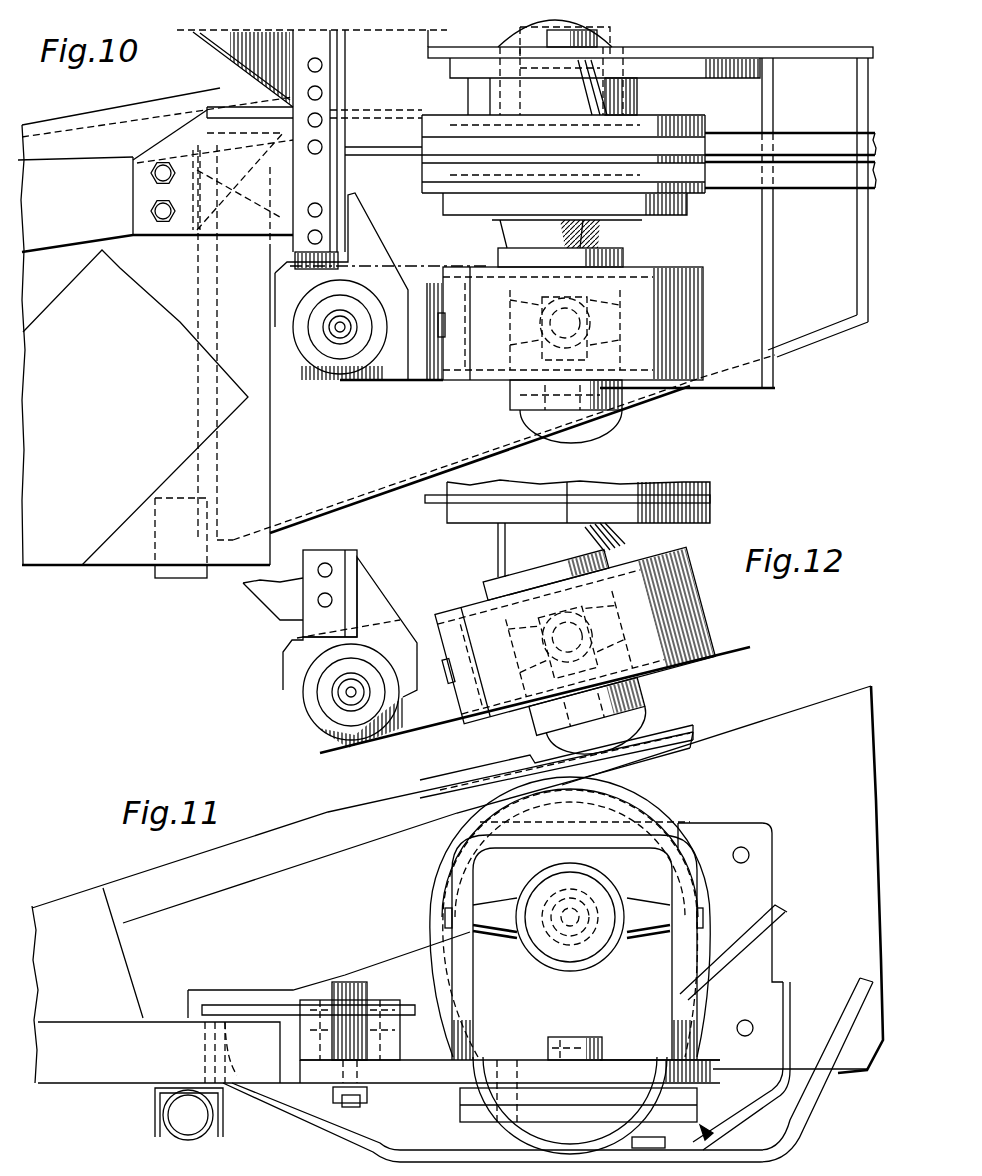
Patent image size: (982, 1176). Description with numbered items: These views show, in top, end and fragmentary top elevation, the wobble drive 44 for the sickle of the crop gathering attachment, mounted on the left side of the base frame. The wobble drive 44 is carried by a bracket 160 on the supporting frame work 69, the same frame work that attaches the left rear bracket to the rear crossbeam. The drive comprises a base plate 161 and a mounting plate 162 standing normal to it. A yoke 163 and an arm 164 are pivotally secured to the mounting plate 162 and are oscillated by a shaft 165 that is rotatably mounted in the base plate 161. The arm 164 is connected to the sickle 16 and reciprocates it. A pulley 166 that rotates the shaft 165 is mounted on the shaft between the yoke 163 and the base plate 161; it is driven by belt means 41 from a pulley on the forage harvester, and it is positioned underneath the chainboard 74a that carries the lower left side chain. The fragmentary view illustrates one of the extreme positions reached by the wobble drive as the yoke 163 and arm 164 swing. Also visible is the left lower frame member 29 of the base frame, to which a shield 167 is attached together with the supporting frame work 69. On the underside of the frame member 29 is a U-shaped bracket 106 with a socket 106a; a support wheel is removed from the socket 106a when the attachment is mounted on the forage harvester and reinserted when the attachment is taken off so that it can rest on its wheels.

In FIG. 10, the sickle 16 is at (350, 184).
In FIG. 12, the sickle 16 is at (278, 604).
In FIG. 11, the sickle 16 is at (247, 1007).
In FIG. 10, the left lower frame member 29 is at (128, 553).
In FIG. 11, the left lower frame member 29 is at (120, 1073).
In FIG. 10, the belt means 41 is at (848, 183).
In FIG. 10, the wobble drive 44 is at (589, 252).
In FIG. 11, the wobble drive 44 is at (738, 886).
In FIG. 10, the supporting frame work 69 is at (718, 47).
In FIG. 11, the supporting frame work 69 is at (763, 713).
In FIG. 10, the chainboard 74a is at (68, 557).
In FIG. 12, the chainboard 74a is at (433, 780).
In FIG. 11, the U-shaped bracket 106 is at (155, 1125).
In FIG. 11, the socket 106a is at (225, 1168).
In FIG. 10, the bracket 160 is at (776, 388).
In FIG. 11, the bracket 160 is at (790, 974).
In FIG. 10, the base plate 161 is at (638, 60).
In FIG. 11, the base plate 161 is at (768, 872).
In FIG. 11, the mounting plate 162 is at (727, 1117).
In FIG. 10, the yoke 163 is at (673, 270).
In FIG. 12, the yoke 163 is at (700, 537).
In FIG. 11, the yoke 163 is at (677, 847).
In FIG. 10, the arm 164 is at (390, 382).
In FIG. 12, the arm 164 is at (368, 750).
In FIG. 11, the arm 164 is at (390, 1075).
In FIG. 10, the shaft 165 is at (630, 97).
In FIG. 12, the shaft 165 is at (508, 556).
In FIG. 10, the pulley 166 is at (695, 130).
In FIG. 12, the pulley 166 is at (690, 487).
In FIG. 11, the pulley 166 is at (645, 797).
In FIG. 10, the shield 167 is at (343, 507).
In FIG. 11, the shield 167 is at (337, 1128).